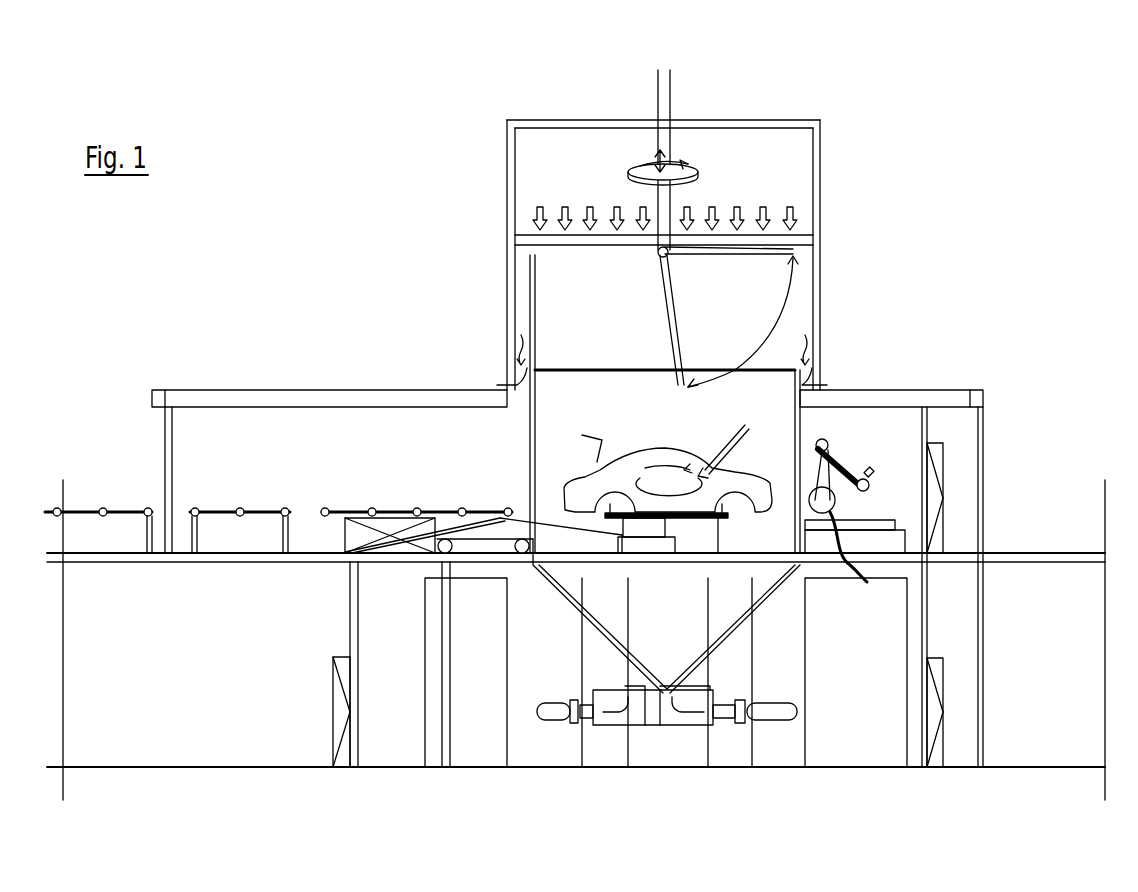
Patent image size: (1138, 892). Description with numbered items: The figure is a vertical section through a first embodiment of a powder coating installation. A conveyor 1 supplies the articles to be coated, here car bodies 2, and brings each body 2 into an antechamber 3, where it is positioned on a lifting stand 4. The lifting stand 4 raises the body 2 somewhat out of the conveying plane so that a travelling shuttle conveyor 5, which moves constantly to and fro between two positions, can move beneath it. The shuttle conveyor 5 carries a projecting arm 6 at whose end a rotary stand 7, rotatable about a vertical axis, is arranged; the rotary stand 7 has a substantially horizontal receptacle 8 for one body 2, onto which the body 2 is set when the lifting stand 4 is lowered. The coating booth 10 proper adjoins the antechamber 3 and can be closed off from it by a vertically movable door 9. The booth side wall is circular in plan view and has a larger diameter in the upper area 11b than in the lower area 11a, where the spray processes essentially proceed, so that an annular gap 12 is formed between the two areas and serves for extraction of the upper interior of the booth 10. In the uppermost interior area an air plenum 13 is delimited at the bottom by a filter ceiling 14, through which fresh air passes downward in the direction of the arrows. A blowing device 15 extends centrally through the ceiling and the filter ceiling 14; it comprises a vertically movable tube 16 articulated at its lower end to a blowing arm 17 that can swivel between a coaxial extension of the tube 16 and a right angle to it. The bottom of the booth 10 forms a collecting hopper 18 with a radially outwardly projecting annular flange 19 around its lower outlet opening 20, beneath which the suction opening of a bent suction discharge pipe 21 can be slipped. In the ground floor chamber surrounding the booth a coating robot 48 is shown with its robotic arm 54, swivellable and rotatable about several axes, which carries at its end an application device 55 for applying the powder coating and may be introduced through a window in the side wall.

The conveyor 1 is at (103, 506).
The car body 2 is at (630, 448).
The antechamber 3 is at (212, 456).
The lifting stand 4 is at (372, 508).
The shuttle conveyor 5 is at (472, 534).
The projecting arm 6 is at (655, 540).
The rotary stand 7 is at (625, 522).
The receptacle 8 is at (720, 540).
The door 9 is at (533, 288).
The coating booth 10 is at (747, 392).
The lower area of side wall 11a is at (798, 423).
The upper area of side wall 11b is at (820, 155).
The annular gap 12 is at (805, 392).
The air plenum 13 is at (556, 173).
The filter ceiling 14 is at (598, 240).
The blowing device 15 is at (653, 158).
The tube 16 is at (662, 108).
The blowing arm 17 is at (748, 247).
The collecting hopper 18 is at (778, 592).
The annular flange 19 is at (703, 688).
The outlet opening 20 is at (672, 707).
The suction discharge pipe 21 is at (667, 725).
The coating robot 48 is at (850, 455).
The robotic arm 54 is at (843, 483).
The application device 55 is at (843, 493).